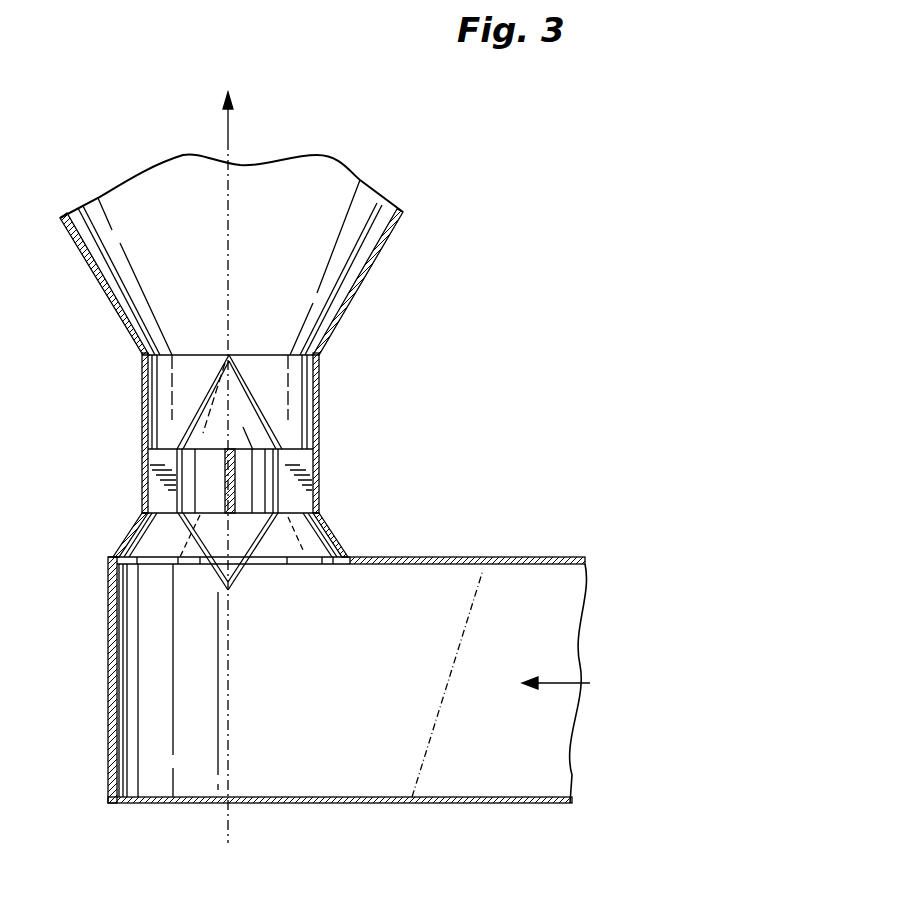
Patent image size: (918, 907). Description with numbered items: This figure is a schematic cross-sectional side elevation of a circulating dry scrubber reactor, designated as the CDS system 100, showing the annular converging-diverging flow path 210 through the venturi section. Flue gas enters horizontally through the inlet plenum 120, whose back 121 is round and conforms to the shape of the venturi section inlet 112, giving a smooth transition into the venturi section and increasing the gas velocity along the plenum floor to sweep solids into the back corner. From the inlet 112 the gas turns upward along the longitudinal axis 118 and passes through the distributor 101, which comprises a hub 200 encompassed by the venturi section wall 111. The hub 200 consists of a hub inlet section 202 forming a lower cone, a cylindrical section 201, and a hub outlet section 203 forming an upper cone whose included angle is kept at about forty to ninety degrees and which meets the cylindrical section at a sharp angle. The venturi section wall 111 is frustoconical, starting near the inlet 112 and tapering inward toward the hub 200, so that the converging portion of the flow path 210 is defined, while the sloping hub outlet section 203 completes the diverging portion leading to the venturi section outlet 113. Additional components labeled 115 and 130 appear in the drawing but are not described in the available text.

The CDS system 100 is at (494, 140).
The distributor 101 is at (227, 429).
The venturi section wall 111 is at (320, 372).
The venturi section inlet 112 is at (112, 548).
The venturi section outlet 113 is at (179, 355).
The seal / compartment 115 is at (150, 455).
The longitudinal axis 118 is at (227, 827).
The inlet plenum 120 is at (483, 770).
The back of the inlet plenum 121 is at (353, 695).
The outlet funnel 130 is at (95, 278).
The hub 200 is at (239, 452).
The cylindrical section 201 is at (262, 470).
The hub inlet section 202 is at (250, 540).
The hub outlet section 203 is at (213, 390).
The converging-diverging flow path 210 is at (300, 542).